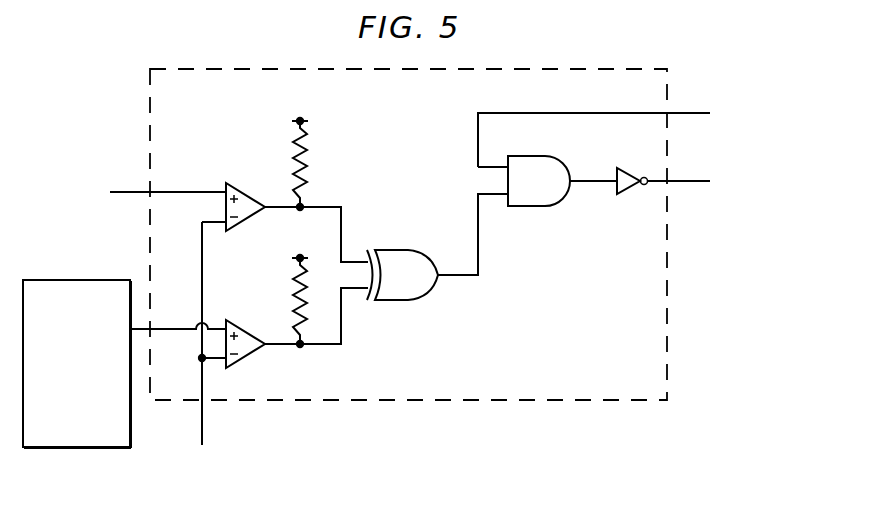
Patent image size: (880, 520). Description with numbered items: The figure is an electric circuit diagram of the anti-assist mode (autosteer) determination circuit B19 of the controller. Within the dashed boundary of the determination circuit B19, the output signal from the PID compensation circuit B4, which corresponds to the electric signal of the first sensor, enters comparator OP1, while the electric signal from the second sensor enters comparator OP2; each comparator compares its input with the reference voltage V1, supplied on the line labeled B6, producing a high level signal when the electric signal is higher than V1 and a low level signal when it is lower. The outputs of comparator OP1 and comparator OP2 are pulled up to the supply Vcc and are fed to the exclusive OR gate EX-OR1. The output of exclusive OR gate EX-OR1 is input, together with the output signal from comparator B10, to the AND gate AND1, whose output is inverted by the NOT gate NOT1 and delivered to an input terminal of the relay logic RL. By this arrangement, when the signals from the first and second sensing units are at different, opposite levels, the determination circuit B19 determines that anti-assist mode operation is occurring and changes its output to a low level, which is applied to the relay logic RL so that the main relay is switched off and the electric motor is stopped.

The PID compensation circuit B4 is at (151, 192).
The input signal B6 line B6 is at (195, 335).
The reference voltage V1 is at (203, 438).
The comparator B10 is at (614, 135).
The relay logic RL is at (694, 181).
The anti-assist mode determination circuit B19 is at (408, 250).
The comparator OP1 is at (294, 212).
The comparator OP2 is at (296, 328).
The supply voltage Vcc pull-up resistors Vcc is at (298, 220).
The exclusive OR gate EX-OR1 is at (434, 260).
The AND gate AND1 is at (547, 194).
The NOT gate NOT1 is at (624, 194).